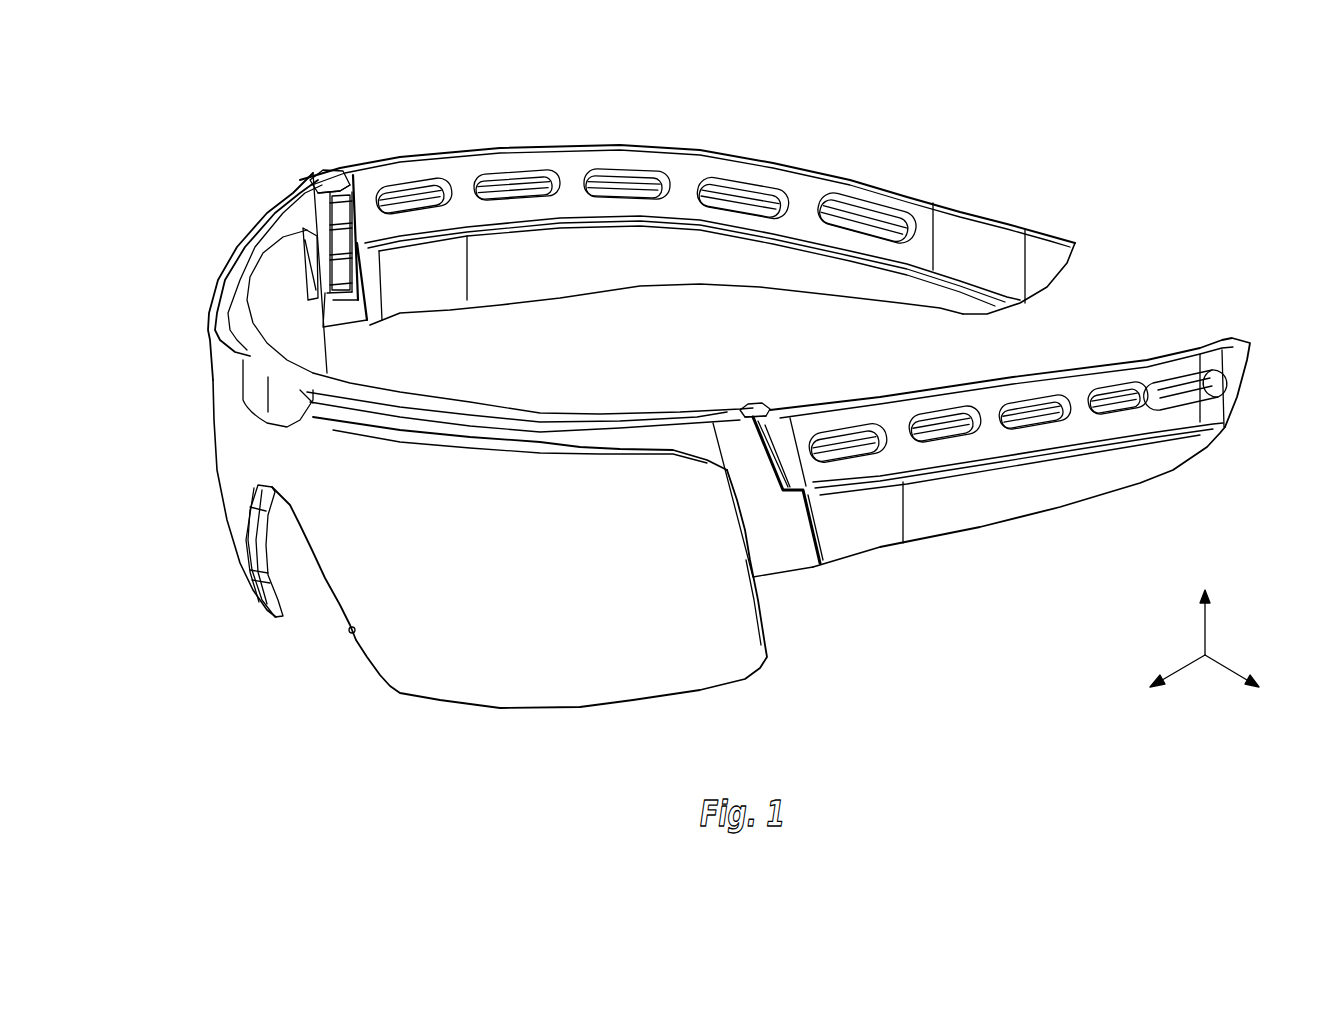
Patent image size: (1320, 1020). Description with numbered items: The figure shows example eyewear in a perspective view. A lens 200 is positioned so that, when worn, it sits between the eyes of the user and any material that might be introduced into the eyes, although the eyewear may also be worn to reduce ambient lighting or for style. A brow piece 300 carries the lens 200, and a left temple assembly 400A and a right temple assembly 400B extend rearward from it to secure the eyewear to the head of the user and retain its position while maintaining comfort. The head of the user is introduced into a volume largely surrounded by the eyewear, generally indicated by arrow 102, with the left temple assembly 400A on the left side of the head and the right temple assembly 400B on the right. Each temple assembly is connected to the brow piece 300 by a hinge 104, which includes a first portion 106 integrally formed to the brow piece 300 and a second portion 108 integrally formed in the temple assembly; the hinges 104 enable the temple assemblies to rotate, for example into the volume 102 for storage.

The volume 102 is at (1163, 270).
The hinge 104 is at (312, 158).
The first portion 106 is at (336, 190).
The second portion 108 is at (345, 205).
The lens 200 is at (420, 670).
The brow piece 300 is at (252, 398).
The left temple assembly 400A is at (1185, 358).
The right temple assembly 400B is at (780, 175).